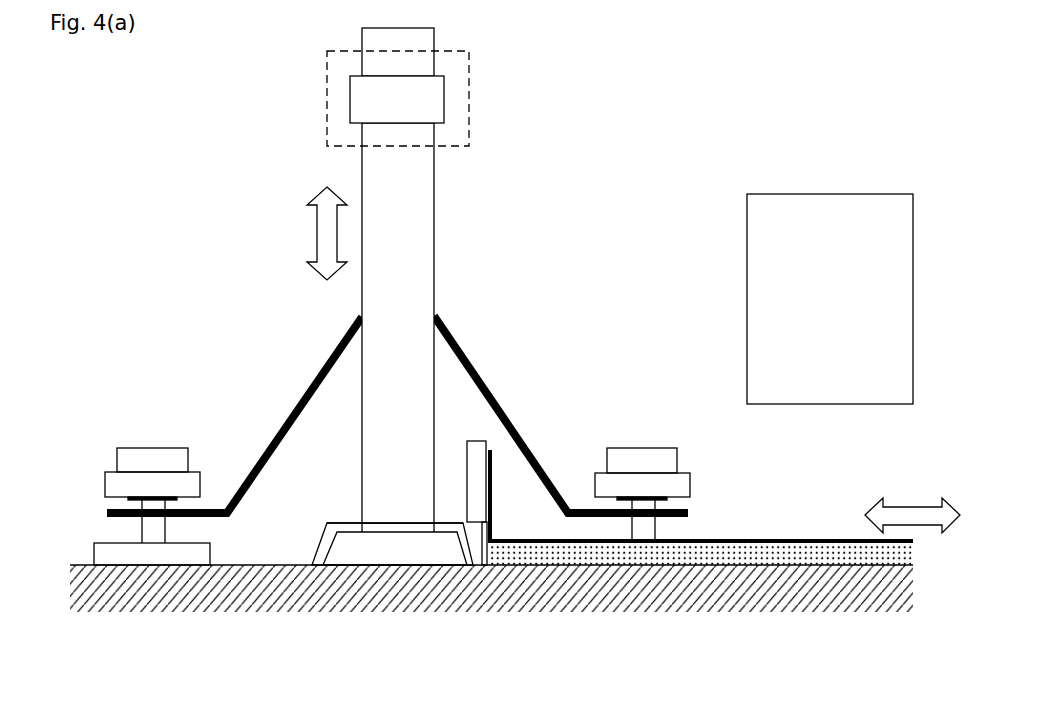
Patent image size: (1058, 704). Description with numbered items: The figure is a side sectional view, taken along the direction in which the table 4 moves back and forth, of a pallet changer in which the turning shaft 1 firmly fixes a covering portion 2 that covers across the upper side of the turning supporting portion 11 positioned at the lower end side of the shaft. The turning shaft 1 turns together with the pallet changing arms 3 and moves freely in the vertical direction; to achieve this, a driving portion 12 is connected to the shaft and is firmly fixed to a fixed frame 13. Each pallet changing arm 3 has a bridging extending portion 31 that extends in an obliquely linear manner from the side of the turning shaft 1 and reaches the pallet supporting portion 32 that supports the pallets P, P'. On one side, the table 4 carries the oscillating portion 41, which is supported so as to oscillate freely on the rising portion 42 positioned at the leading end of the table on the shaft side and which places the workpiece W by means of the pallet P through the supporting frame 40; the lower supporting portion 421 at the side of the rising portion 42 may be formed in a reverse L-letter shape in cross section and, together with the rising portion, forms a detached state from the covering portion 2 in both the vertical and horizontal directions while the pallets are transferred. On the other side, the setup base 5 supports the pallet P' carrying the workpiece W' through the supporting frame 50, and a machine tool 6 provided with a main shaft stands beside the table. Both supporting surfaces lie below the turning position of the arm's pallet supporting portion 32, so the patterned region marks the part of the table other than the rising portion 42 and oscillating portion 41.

The turning shaft 1 is at (389, 280).
The covering portion 2 is at (348, 525).
The pallet changing arm 3 is at (397, 390).
The bridging extending portion 31 is at (322, 365).
The pallet supporting portion 32 is at (207, 510).
The table 4 is at (687, 555).
The supporting frame for pallet arranged at oscillating portion 40 is at (642, 520).
The oscillating portion of table 41 is at (543, 542).
The rising portion of table 42 is at (460, 522).
The positioning pin 421 is at (480, 522).
The setup base 5 is at (135, 553).
The supporting frame for pallet arranged on setup base 50 is at (155, 525).
The machine tool provided with main shaft 6 is at (778, 210).
The turning supporting portion 11 is at (367, 553).
The driving portion for turning shaft 12 is at (412, 99).
The fixed frame 13 is at (327, 112).
The workpiece W is at (642, 413).
The pallet P is at (645, 419).
The workpiece W' is at (139, 413).
The pallet P' is at (160, 434).